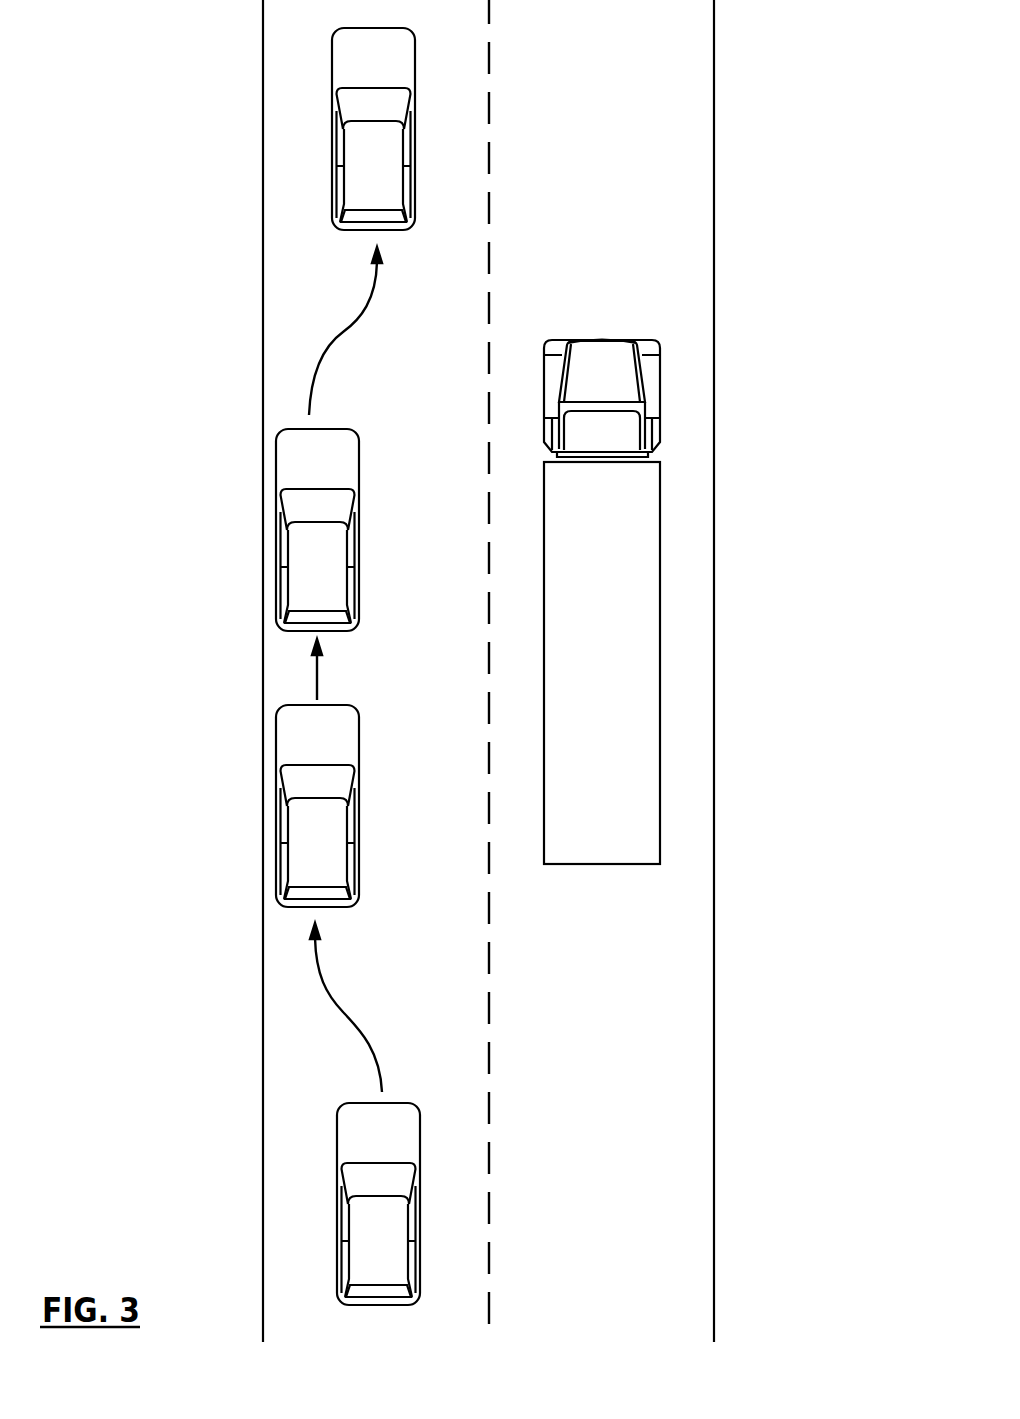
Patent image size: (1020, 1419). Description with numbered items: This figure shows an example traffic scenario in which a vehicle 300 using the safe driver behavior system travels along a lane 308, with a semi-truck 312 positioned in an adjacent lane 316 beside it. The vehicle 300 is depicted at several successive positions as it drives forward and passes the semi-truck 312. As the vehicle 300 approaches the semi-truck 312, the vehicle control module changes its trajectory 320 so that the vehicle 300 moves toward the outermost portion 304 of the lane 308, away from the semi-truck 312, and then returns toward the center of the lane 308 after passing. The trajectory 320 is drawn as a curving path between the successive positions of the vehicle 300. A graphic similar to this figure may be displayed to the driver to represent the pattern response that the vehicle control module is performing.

The vehicle 300 is at (333, 110).
The outermost portion 304 is at (263, 943).
The lane 308 is at (379, 1329).
The semi-truck 312 is at (660, 563).
The adjacent lane 316 is at (632, 1071).
The trajectory 320 is at (343, 1012).